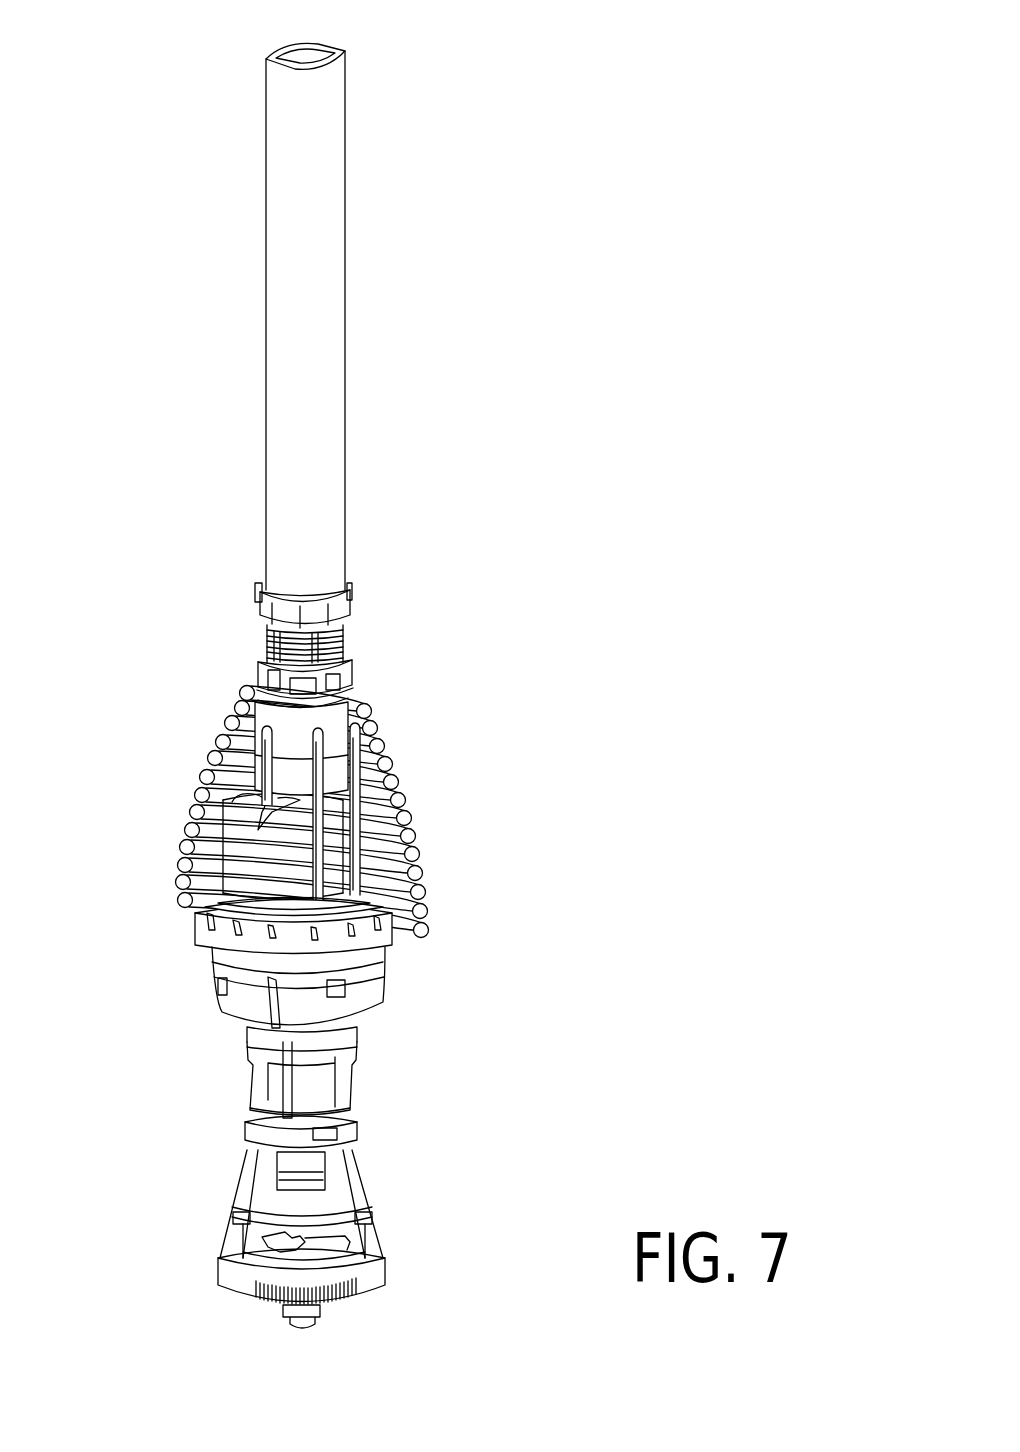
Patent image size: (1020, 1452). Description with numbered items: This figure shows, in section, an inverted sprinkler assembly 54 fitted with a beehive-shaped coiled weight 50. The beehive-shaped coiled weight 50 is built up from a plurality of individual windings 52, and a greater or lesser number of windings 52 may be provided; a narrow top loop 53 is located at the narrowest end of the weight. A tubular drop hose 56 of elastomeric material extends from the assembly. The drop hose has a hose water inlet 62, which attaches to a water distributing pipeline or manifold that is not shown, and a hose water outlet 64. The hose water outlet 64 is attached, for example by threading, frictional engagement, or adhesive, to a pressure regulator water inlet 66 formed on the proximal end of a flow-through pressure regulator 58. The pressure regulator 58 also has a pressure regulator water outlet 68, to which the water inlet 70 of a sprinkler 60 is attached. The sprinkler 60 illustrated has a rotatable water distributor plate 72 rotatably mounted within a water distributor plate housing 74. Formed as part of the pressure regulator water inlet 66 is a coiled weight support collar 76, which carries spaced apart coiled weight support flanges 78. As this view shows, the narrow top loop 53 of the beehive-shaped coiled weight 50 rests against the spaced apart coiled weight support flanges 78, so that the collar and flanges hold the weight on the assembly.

The beehive-shaped coiled weight 50 is at (344, 812).
The windings 52 is at (187, 868).
The narrow top loop 53 is at (362, 702).
The inverted sprinkler assembly 54 is at (527, 255).
The tubular drop hose 56 is at (283, 355).
The pressure regulator 58 is at (392, 995).
The sprinkler 60 is at (372, 1148).
The hose water inlet 62 is at (305, 52).
The hose water outlet 64 is at (330, 575).
The pressure regulator water inlet 66 is at (262, 690).
The pressure regulator water outlet 68 is at (315, 1090).
The water inlet 70 is at (258, 1128).
The rotatable water distributor plate 72 is at (290, 1238).
The water distributor plate housing 74 is at (372, 1242).
The coiled weight support collar 76 is at (330, 715).
The coiled weight support flanges 78 is at (268, 752).